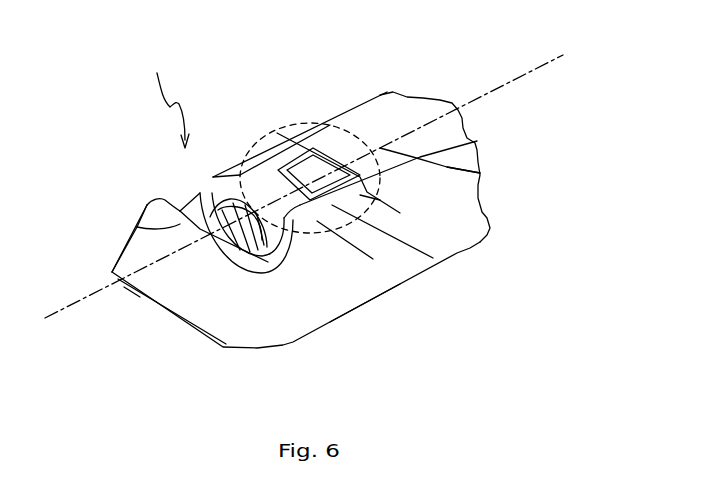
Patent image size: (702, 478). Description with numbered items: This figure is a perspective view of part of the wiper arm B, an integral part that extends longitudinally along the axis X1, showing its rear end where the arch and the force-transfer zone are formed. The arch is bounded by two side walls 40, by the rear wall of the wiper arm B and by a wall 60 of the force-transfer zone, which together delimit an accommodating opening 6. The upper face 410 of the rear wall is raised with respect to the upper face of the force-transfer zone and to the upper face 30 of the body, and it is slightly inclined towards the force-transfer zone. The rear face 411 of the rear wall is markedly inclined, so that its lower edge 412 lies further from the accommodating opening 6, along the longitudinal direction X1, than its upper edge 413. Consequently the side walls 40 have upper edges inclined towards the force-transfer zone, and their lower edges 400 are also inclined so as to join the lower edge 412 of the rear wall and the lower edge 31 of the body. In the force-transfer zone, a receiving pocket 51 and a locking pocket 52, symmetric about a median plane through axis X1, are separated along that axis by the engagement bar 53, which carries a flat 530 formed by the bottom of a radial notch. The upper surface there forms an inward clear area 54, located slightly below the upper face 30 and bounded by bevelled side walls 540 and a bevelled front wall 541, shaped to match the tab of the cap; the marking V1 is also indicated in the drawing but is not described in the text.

The accommodating opening 6 is at (218, 194).
The upper face of the body 30 is at (398, 134).
The lower edge of the body 31 is at (363, 307).
The side wall 40 is at (258, 308).
The receiving pocket 51 is at (480, 173).
The locking pocket 52 is at (278, 170).
The engagement bar 53 is at (433, 258).
The clear area 54 is at (310, 200).
The wall of the force-transfer zone 60 is at (277, 240).
The lower edge of the side wall 400 is at (253, 348).
The upper face of the rear wall 410 is at (160, 200).
The rear face of the rear wall 411 is at (138, 248).
The lower edge of the rear wall 412 is at (180, 315).
The upper edge of the rear wall 413 is at (140, 229).
The flat 530 is at (300, 142).
The side wall of the clear area 540 is at (257, 168).
The front wall of the clear area 541 is at (225, 175).
The wiper arm B is at (169, 100).
The longitudinal axis X1 is at (306, 186).
The direction V1 is at (380, 200).